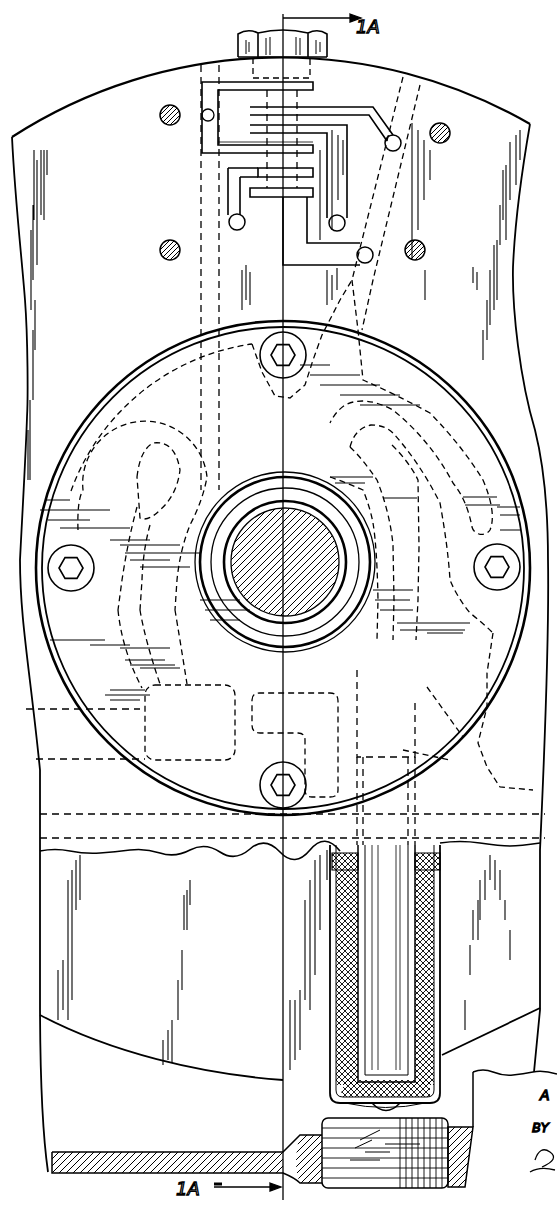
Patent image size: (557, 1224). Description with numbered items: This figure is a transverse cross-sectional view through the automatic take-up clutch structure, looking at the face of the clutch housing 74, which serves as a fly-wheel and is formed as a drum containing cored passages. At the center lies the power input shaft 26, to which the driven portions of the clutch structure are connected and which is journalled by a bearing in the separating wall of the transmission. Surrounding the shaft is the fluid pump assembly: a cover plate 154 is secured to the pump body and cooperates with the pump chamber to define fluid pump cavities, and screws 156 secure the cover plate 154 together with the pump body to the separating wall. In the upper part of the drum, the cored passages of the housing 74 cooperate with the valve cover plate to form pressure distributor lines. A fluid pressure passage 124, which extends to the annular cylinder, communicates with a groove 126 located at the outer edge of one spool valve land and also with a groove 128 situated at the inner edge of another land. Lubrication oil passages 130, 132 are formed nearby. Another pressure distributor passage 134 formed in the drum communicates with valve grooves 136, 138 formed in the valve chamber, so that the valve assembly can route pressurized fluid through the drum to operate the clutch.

The power input shaft 26 is at (256, 530).
The clutch housing 74 is at (464, 97).
The fluid pressure passage 124 is at (389, 204).
The groove 126 is at (355, 88).
The groove 128 is at (268, 192).
The lubrication oil passage 130 is at (345, 222).
The lubrication oil passage 132 is at (230, 222).
The pressure distributor passage 134 is at (205, 177).
The valve groove 136 is at (231, 84).
The valve groove 138 is at (273, 148).
The cover plate 154 is at (168, 392).
The screws 156 is at (292, 333).